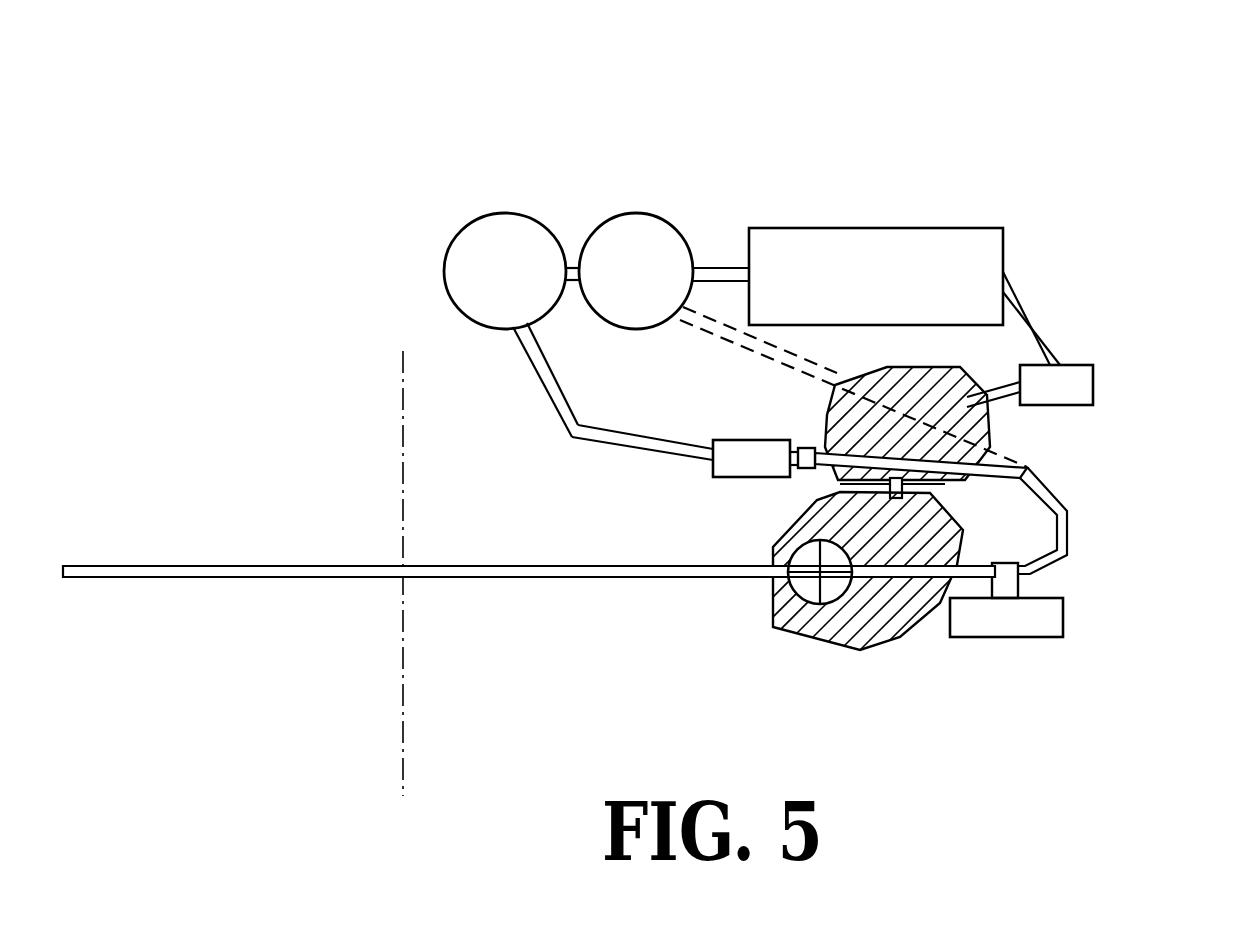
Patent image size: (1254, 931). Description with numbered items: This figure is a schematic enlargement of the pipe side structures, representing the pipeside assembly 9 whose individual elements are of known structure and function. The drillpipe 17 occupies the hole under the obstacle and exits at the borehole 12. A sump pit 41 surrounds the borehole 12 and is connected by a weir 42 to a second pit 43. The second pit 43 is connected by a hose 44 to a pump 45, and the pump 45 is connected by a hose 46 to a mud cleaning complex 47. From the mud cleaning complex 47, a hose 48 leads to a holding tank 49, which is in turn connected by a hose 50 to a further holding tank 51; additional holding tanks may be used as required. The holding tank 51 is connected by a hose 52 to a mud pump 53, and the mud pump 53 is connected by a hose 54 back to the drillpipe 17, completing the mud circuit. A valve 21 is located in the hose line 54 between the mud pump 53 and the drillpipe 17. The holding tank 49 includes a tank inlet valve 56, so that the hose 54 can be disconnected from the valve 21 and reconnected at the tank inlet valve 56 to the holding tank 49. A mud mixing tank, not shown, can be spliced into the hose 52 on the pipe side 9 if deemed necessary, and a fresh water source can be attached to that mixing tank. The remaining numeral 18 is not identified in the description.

The pipeside assembly 9 is at (932, 52).
The borehole 12 is at (790, 618).
The drillpipe 17 is at (527, 578).
The support block 18 is at (985, 620).
The valve 21 is at (855, 479).
The sump pit 41 is at (845, 628).
The weir 42 is at (866, 482).
The second pit 43 is at (993, 438).
The hose 44 is at (993, 400).
The pump 45 is at (1075, 378).
The hose 46 is at (1030, 310).
The mud cleaning complex 47 is at (855, 252).
The hose 48 is at (719, 268).
The holding tank 49 is at (623, 240).
The hose 50 is at (566, 262).
The holding tank 51 is at (478, 258).
The hose 52 is at (555, 405).
The mud pump 53 is at (752, 453).
The hose 54 is at (1070, 527).
The tank inlet valve 56 is at (673, 322).